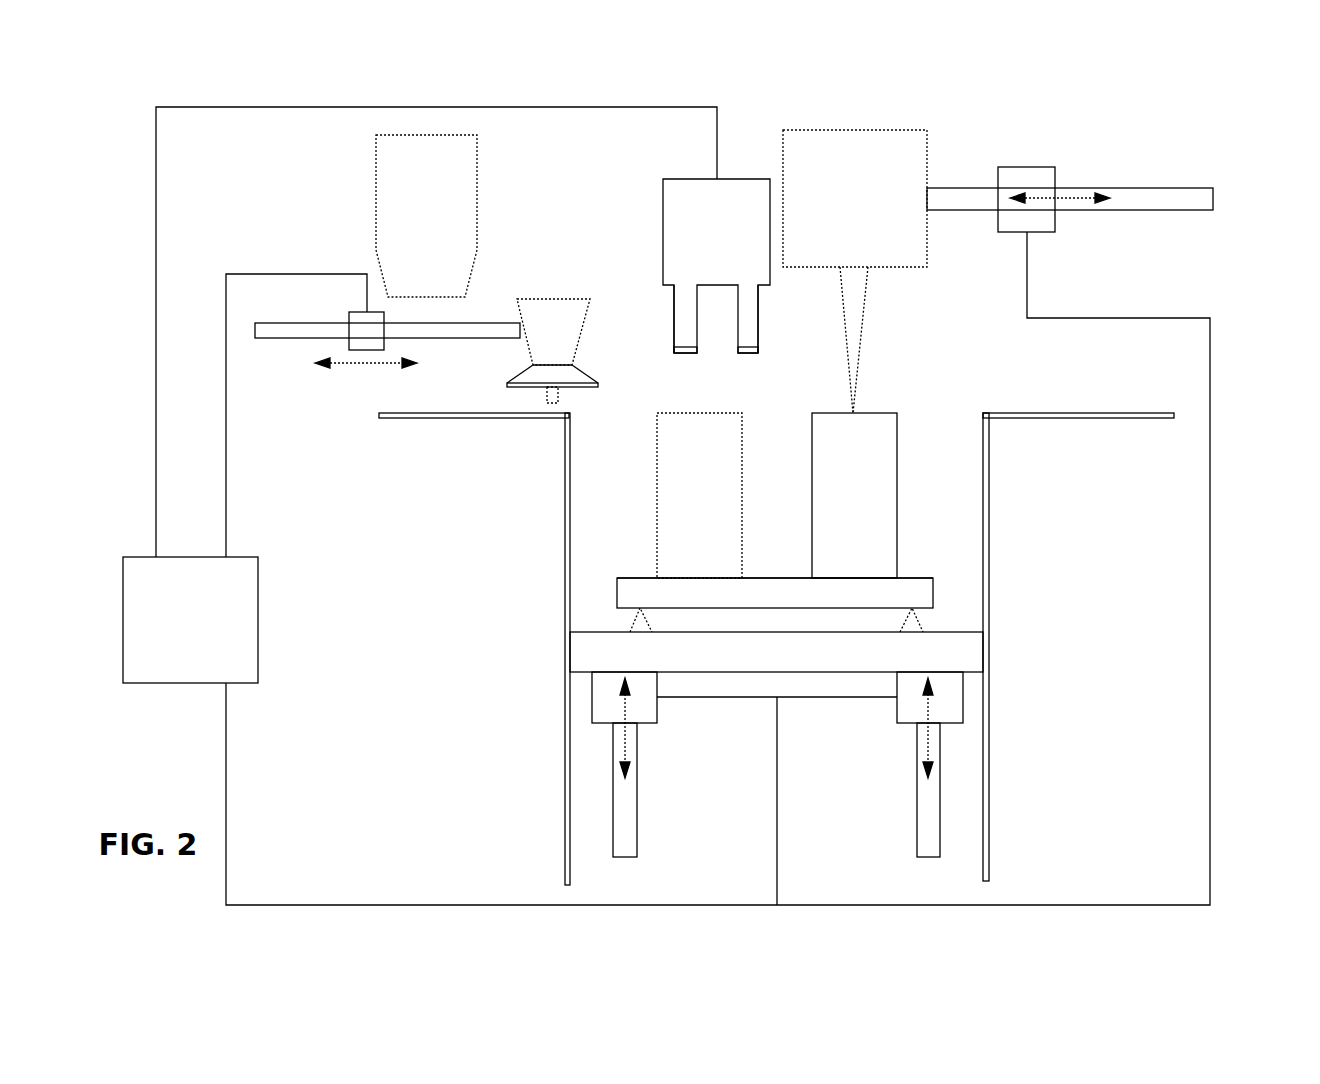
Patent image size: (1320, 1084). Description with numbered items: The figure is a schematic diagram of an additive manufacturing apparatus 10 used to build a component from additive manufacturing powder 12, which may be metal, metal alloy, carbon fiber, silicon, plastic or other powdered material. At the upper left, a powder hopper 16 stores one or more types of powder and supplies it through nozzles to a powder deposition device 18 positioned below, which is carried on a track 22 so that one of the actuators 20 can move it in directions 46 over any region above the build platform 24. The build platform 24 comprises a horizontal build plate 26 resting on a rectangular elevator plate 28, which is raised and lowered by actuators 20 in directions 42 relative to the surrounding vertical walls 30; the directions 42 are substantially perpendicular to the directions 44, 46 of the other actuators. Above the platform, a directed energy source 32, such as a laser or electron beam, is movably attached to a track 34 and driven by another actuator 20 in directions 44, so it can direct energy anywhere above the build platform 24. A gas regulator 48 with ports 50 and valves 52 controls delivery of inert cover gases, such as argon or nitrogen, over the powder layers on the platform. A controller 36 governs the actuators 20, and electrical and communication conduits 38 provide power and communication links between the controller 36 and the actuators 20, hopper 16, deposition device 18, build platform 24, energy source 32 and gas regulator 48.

The additive manufacturing apparatus 10 is at (900, 110).
The additive manufacturing powder 12 is at (685, 456).
The powder hopper 16 is at (388, 152).
The powder deposition device 18 is at (572, 305).
The actuators 20 is at (350, 313).
The track 22 is at (433, 328).
The build platform 24 is at (935, 590).
The build plate 26 is at (643, 592).
The elevator plate 28 is at (848, 655).
The vertical walls 30 is at (566, 513).
The directed energy source 32 is at (818, 160).
The track 34 is at (958, 200).
The controller 36 is at (258, 625).
The electrical conduits 38 is at (617, 108).
The directions 42 is at (625, 738).
The directions 44 is at (1068, 200).
The directions 46 is at (365, 365).
The gas regulator 48 is at (674, 206).
The ports 50 is at (681, 326).
The valves 52 is at (686, 353).